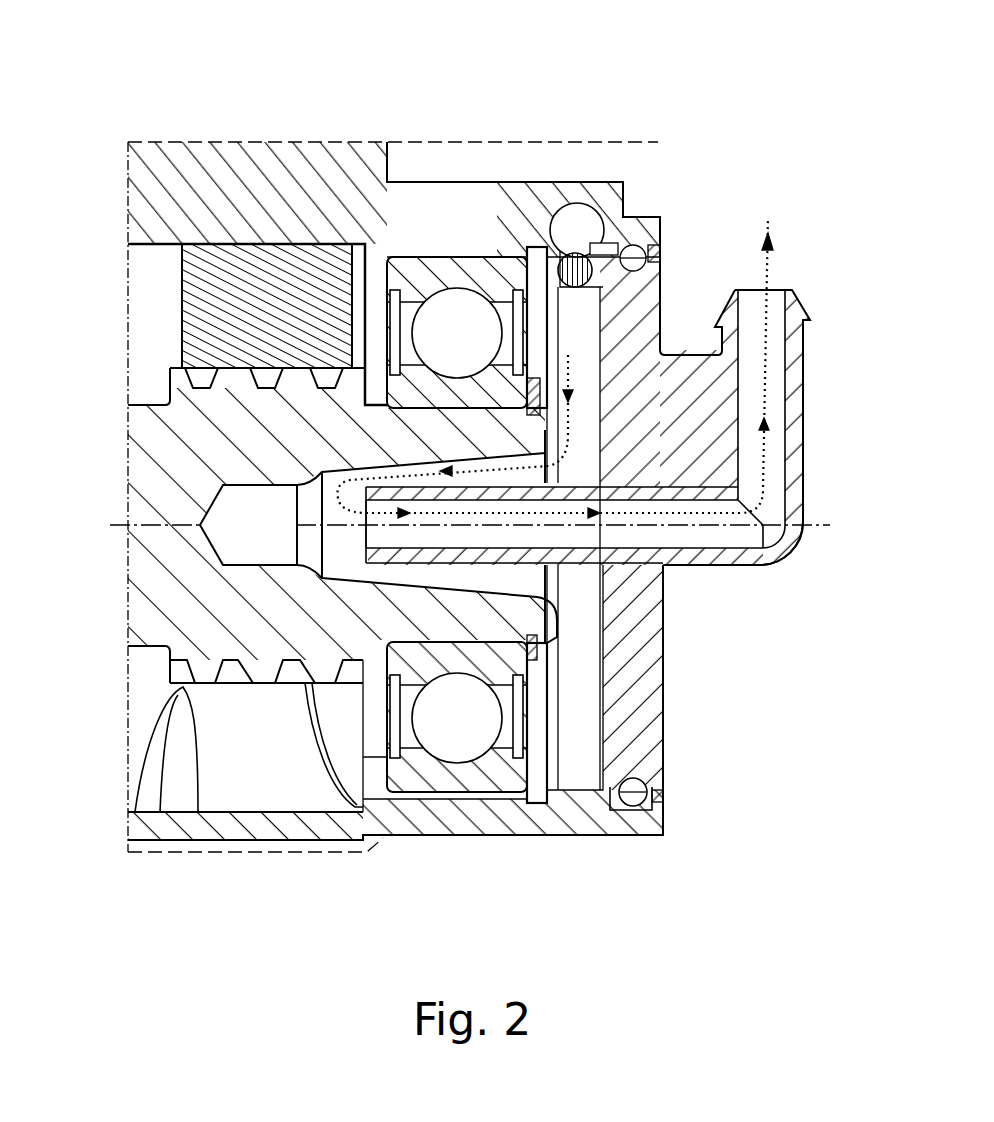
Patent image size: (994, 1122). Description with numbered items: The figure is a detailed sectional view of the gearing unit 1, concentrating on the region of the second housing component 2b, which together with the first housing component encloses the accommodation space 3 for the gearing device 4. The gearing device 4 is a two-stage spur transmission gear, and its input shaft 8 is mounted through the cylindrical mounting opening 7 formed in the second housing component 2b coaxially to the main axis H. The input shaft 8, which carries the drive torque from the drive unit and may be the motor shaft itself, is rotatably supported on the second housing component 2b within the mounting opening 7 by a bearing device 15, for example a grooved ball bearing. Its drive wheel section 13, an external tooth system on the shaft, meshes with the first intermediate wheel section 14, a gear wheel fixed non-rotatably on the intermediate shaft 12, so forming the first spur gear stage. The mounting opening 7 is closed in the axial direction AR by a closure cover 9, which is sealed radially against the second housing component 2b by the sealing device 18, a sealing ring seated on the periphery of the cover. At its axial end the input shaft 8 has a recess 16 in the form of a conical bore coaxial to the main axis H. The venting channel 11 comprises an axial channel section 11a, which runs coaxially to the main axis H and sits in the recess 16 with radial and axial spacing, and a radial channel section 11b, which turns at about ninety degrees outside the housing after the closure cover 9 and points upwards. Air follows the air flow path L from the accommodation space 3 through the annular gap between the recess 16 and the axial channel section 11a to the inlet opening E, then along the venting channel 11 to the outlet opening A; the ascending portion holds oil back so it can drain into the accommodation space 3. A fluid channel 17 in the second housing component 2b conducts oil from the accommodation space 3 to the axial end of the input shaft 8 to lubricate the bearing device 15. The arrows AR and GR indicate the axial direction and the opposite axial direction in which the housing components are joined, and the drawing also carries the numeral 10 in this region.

The gearing unit 1 is at (157, 103).
The second housing component 2b is at (308, 168).
The accommodation space 3 is at (205, 758).
The gearing device 4 is at (152, 277).
The mounting opening 7 is at (382, 900).
The input shaft 8 is at (182, 553).
The closure cover 9 is at (645, 683).
The connection piece 10 is at (812, 556).
The venting channel 11 is at (793, 392).
The axial channel section 11a is at (668, 533).
The radial channel section 11b is at (768, 348).
The intermediate shaft 12 is at (162, 331).
The drive wheel section 13 is at (195, 387).
The first intermediate wheel section 14 is at (267, 257).
The bearing device 15 is at (470, 303).
The recess 16 is at (380, 579).
The fluid channel 17 is at (575, 218).
The sealing device 18 is at (650, 798).
The air flow path L is at (770, 224).
The outlet opening A is at (775, 290).
The inlet opening E is at (378, 530).
The main axis H is at (828, 525).
The axial direction AR is at (475, 66).
The opposite axial direction GR is at (577, 117).